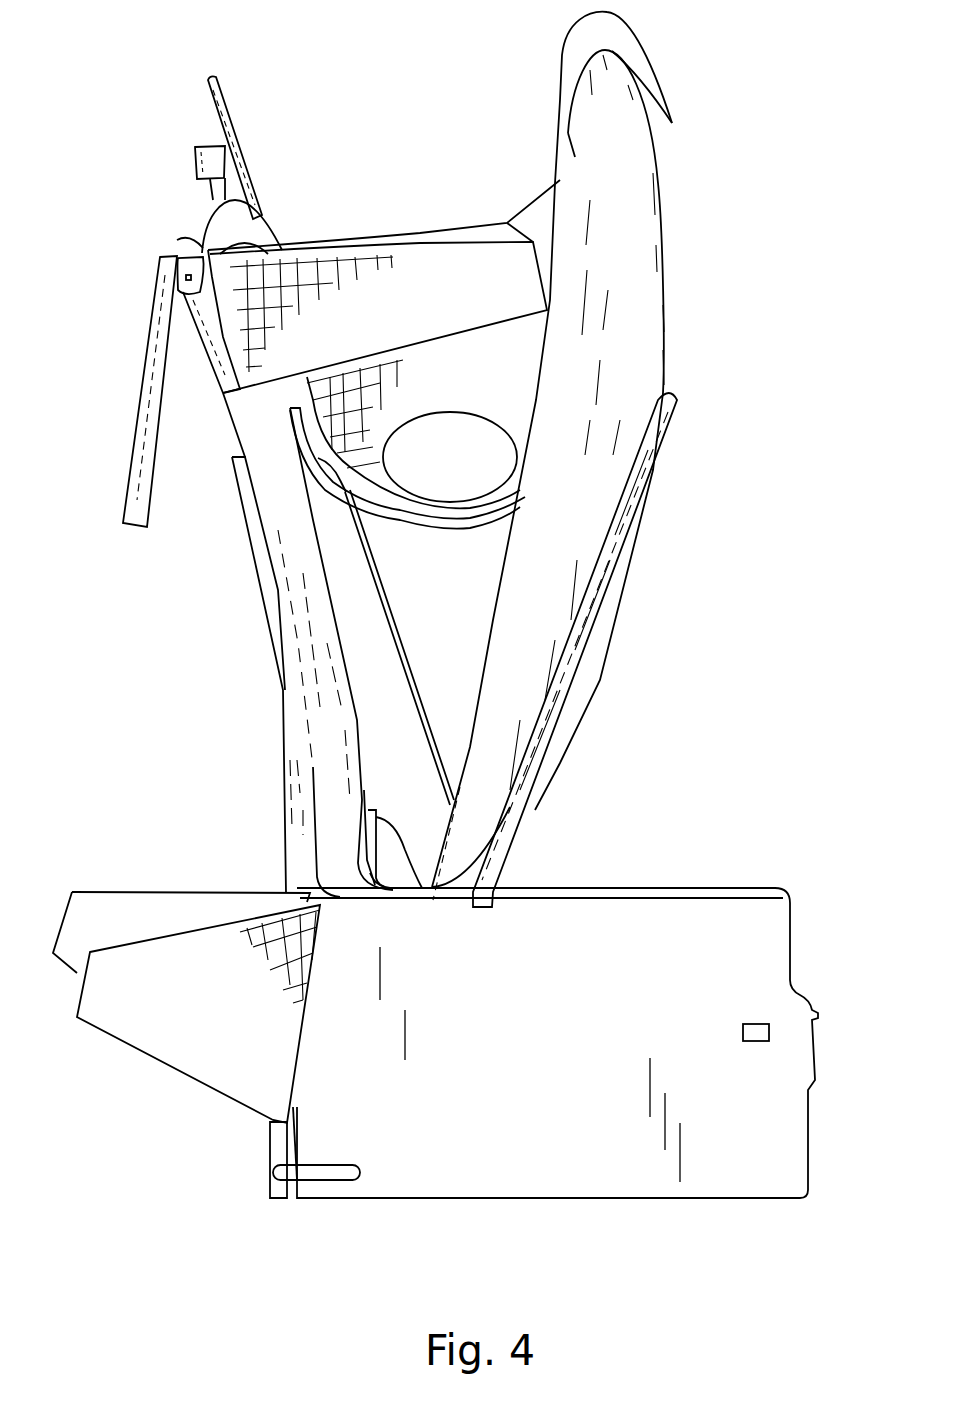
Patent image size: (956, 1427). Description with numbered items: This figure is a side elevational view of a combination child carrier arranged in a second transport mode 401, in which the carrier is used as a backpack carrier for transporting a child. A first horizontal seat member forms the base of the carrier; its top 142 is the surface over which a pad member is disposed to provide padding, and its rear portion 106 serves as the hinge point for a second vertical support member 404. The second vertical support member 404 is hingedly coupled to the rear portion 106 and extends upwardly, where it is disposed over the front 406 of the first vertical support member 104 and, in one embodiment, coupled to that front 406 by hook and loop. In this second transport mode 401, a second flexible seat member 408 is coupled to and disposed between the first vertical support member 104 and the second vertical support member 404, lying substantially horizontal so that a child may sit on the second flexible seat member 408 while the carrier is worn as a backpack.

The second transport mode 401 is at (412, 122).
The second vertical support member 404 is at (633, 333).
The front 406 is at (380, 780).
The second flexible seat member 408 is at (292, 408).
The first vertical support member 104 is at (333, 782).
The rear portion 106 is at (260, 867).
The top 142 is at (673, 878).